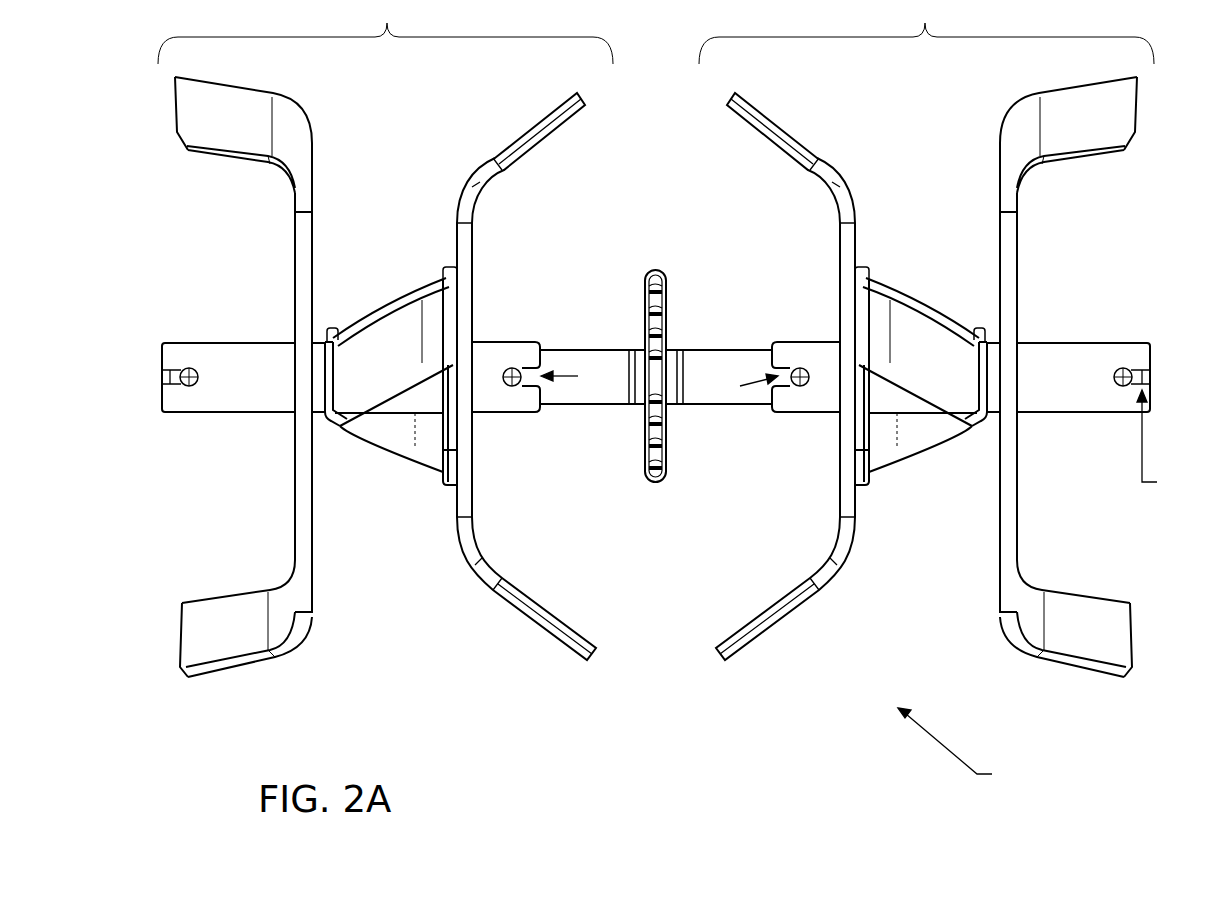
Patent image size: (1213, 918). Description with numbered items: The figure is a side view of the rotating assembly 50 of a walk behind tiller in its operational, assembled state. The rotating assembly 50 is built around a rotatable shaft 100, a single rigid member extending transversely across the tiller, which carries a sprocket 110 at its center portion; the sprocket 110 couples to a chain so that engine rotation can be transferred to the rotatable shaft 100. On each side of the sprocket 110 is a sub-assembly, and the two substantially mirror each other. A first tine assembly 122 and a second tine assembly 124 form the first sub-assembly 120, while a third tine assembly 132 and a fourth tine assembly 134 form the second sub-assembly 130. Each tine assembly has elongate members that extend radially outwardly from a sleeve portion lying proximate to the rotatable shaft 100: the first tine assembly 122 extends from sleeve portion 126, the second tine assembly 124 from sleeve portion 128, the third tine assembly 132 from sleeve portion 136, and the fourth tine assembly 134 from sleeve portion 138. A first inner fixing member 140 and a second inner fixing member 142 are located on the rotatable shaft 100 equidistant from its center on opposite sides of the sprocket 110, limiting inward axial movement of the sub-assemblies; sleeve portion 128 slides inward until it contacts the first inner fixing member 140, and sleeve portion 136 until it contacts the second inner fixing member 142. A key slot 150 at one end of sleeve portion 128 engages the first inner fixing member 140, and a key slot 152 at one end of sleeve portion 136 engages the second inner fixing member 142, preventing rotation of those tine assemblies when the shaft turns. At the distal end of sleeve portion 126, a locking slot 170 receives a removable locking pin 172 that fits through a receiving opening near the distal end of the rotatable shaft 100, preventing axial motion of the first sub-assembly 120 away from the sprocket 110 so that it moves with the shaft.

The rotating assembly 50 is at (959, 746).
The rotatable shaft 100 is at (698, 373).
The sprocket 110 is at (657, 482).
The first sub-assembly 120 is at (926, 32).
The first tine assembly 122 is at (1065, 693).
The second tine assembly 124 is at (850, 607).
The sleeve portion 126 is at (1084, 364).
The sleeve portion 128 is at (841, 411).
The second sub-assembly 130 is at (385, 32).
The third tine assembly 132 is at (476, 660).
The fourth tine assembly 134 is at (271, 688).
The sleeve portion 136 is at (537, 379).
The sleeve portion 138 is at (248, 395).
The first inner fixing member 140 is at (797, 387).
The second inner fixing member 142 is at (516, 370).
The key slot 150 is at (740, 385).
The key slot 152 is at (579, 375).
The locking slot 170 is at (1168, 440).
The locking pin 172 is at (1119, 369).